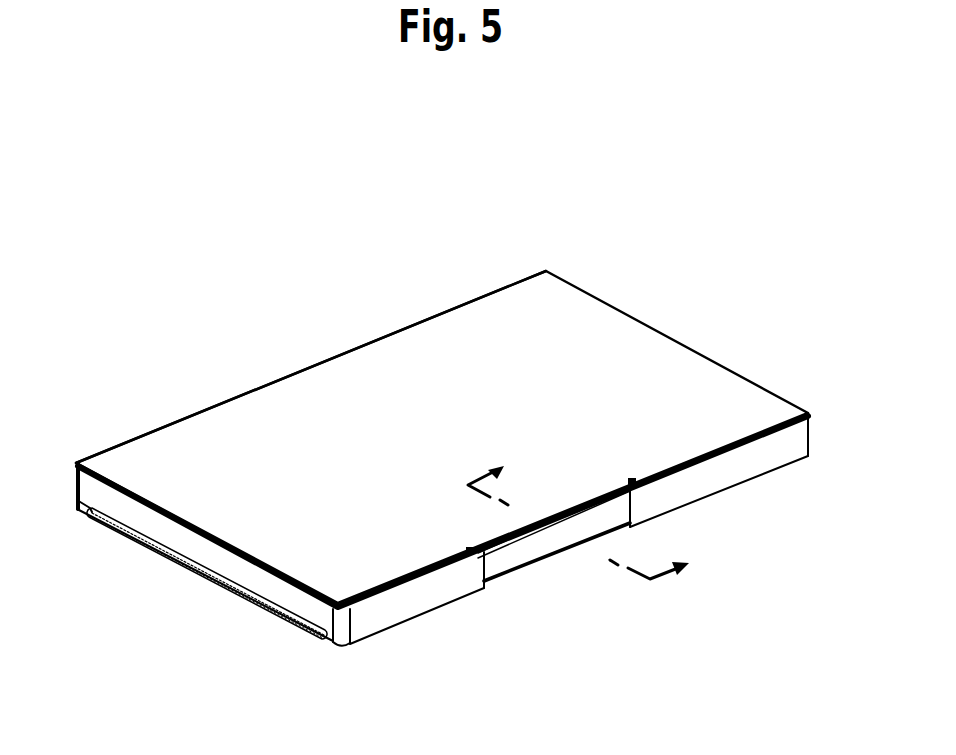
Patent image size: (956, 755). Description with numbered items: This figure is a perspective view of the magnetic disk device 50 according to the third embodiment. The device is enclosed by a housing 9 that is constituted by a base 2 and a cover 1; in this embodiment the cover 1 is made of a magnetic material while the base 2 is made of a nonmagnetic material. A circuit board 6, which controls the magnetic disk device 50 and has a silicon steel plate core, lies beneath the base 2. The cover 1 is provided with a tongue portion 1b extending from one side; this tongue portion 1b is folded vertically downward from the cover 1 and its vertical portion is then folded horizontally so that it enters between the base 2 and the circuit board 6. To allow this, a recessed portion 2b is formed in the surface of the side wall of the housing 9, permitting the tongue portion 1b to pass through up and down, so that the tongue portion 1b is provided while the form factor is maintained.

The magnetic disk device 50 is at (451, 441).
The cover 1 is at (442, 439).
The housing 9 is at (316, 362).
The base 2 is at (752, 463).
The recessed portion 2b is at (630, 527).
The tongue portion 1b is at (513, 553).
The circuit board 6 is at (190, 568).